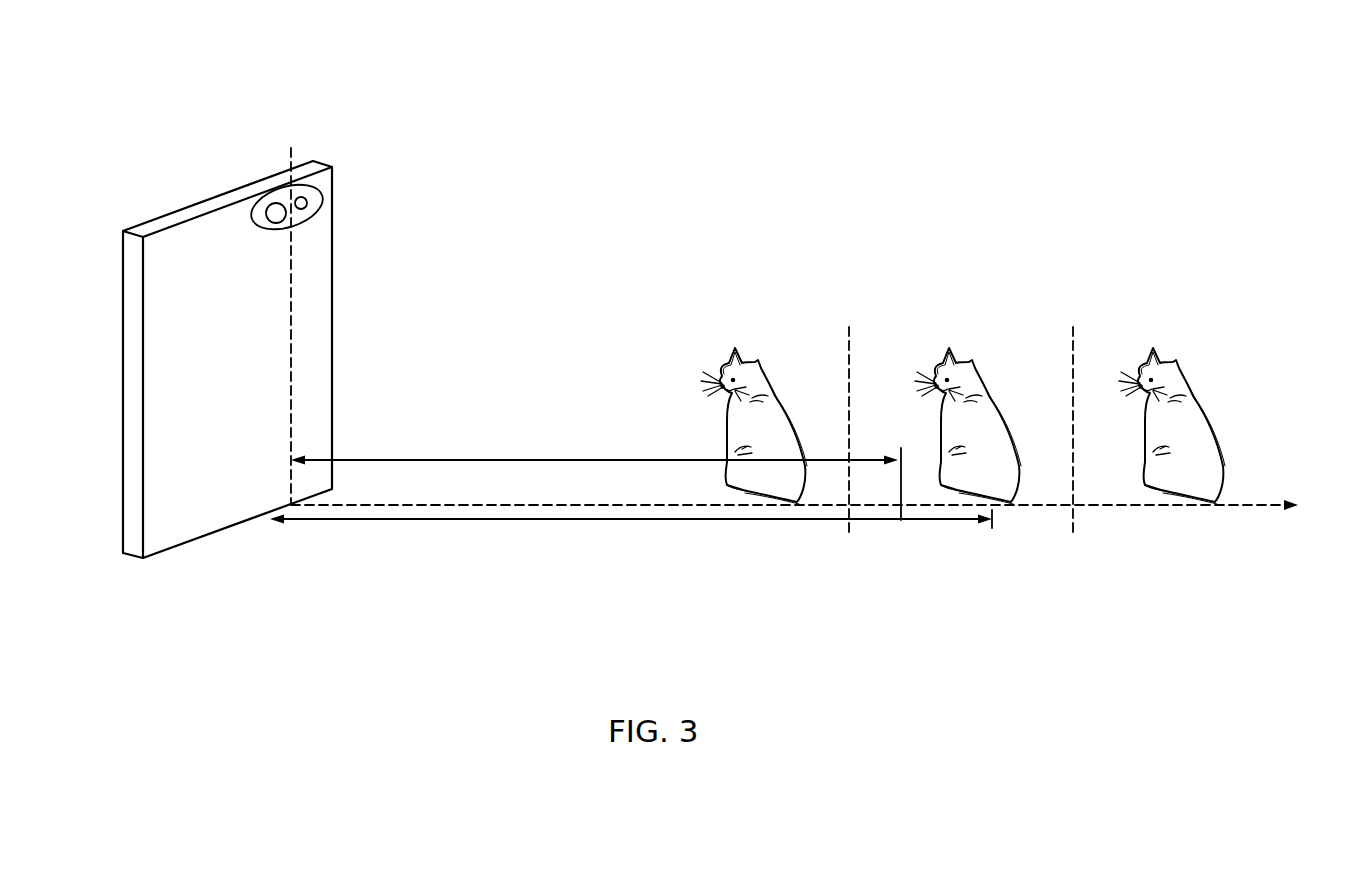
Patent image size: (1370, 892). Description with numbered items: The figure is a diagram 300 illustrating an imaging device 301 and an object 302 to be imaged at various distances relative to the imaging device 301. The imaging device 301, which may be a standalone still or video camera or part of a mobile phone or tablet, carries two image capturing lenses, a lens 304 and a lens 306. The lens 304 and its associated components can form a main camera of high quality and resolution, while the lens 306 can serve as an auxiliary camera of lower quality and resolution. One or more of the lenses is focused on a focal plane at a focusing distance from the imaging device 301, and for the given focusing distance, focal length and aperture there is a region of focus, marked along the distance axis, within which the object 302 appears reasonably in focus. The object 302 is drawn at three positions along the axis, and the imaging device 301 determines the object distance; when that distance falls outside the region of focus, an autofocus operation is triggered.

The diagram 300 is at (1215, 110).
The imaging device 301 is at (172, 210).
The object 302 is at (733, 351).
The lens 304 is at (273, 203).
The lens 306 is at (306, 199).